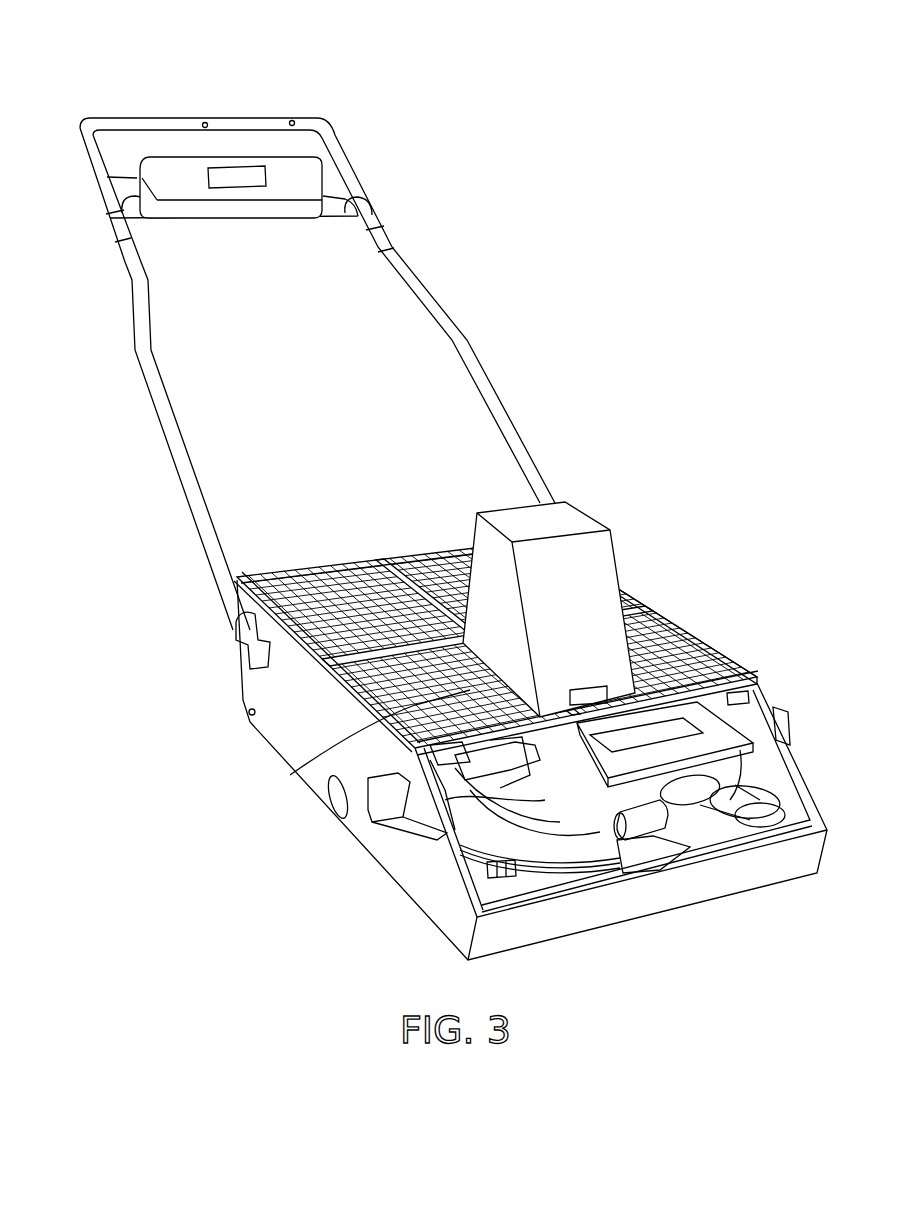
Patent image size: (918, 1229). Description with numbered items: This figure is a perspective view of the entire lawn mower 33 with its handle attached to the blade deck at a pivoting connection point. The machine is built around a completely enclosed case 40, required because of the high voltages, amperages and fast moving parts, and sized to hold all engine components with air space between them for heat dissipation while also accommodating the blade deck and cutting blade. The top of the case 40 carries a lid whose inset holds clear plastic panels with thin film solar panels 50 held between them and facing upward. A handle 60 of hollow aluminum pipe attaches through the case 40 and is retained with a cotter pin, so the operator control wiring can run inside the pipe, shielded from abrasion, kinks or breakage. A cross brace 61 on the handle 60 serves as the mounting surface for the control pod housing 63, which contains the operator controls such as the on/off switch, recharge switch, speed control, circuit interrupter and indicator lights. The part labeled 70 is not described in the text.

The lawn mower 33 is at (118, 283).
The case 40 is at (590, 623).
The solar panels 50 is at (293, 770).
The handle 60 is at (245, 123).
The cross brace 61 is at (123, 123).
The control pod housing 63 is at (300, 175).
The clamp 70 is at (262, 656).